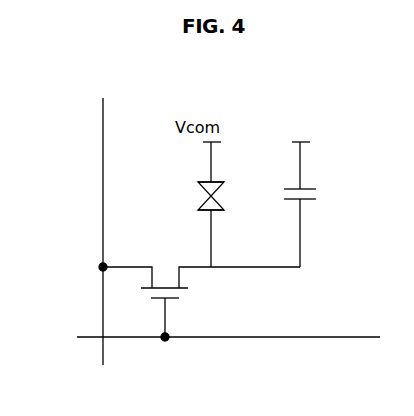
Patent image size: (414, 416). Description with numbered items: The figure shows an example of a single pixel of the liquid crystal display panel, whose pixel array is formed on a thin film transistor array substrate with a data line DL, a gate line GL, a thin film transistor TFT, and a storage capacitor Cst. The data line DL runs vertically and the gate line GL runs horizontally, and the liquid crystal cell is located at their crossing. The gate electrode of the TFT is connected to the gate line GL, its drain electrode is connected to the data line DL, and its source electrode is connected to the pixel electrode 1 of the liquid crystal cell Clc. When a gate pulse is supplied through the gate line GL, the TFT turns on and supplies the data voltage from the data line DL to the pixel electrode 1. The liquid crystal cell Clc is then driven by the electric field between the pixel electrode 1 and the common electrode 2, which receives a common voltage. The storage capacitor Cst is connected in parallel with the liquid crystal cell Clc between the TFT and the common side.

The pixel electrode 1 is at (200, 210).
The common electrode 2 is at (198, 182).
The data line DL is at (103, 150).
The gate line GL is at (305, 337).
The thin film transistor TFT is at (199, 302).
The liquid crystal cell Clc is at (227, 196).
The storage capacitor Cst is at (314, 204).